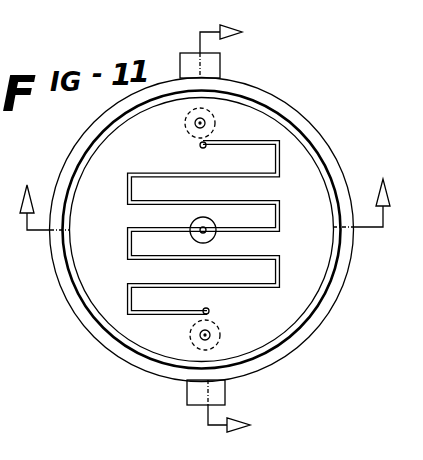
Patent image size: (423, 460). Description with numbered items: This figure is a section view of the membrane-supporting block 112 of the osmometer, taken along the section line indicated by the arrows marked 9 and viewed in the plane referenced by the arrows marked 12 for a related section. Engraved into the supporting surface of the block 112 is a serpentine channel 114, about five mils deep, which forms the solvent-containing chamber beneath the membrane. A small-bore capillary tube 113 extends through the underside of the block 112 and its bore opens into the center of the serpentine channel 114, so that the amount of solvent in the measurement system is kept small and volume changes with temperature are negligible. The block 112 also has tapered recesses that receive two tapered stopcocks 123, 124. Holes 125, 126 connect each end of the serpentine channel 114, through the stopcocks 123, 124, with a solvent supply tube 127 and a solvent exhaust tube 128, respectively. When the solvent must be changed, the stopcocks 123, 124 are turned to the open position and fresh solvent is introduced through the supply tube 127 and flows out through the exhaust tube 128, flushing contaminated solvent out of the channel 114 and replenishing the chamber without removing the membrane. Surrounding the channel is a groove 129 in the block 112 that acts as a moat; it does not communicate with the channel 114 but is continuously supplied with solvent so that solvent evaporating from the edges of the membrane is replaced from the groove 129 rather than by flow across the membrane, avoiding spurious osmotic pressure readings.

The membrane-supporting block 112 is at (297, 118).
The groove 129 is at (113, 330).
The serpentine channel 114 is at (126, 257).
The capillary tube 113 is at (191, 222).
The hole 125 is at (200, 147).
The hole 126 is at (210, 309).
The solvent supply tube 127 is at (215, 117).
The solvent exhaust tube 128 is at (222, 333).
The stopcock 123 is at (222, 71).
The stopcock 124 is at (187, 395).
The section line 12- 12 is at (240, 219).
The section line 9- 9 is at (206, 193).